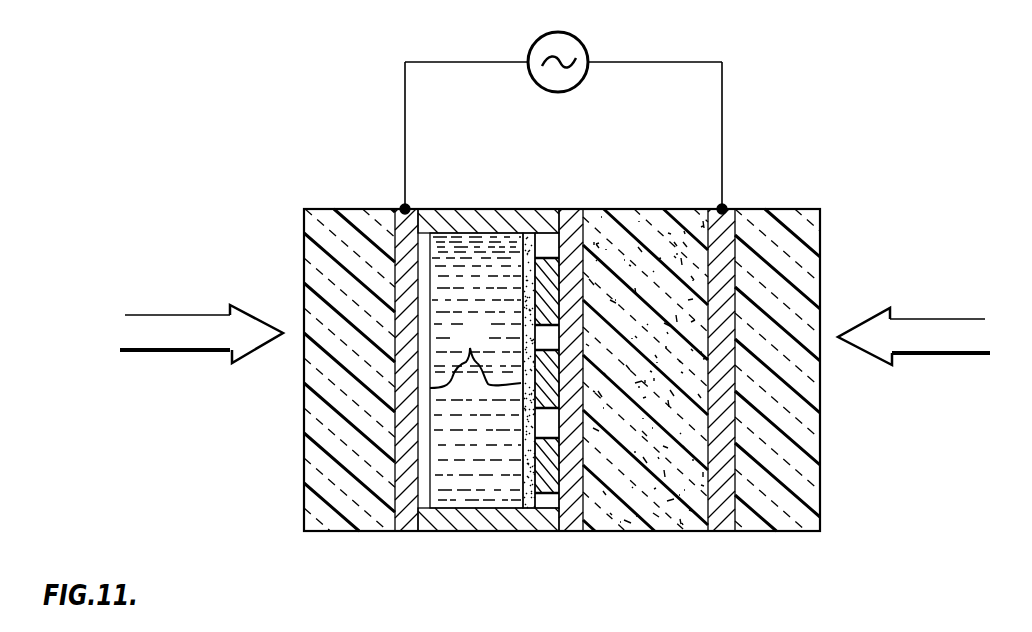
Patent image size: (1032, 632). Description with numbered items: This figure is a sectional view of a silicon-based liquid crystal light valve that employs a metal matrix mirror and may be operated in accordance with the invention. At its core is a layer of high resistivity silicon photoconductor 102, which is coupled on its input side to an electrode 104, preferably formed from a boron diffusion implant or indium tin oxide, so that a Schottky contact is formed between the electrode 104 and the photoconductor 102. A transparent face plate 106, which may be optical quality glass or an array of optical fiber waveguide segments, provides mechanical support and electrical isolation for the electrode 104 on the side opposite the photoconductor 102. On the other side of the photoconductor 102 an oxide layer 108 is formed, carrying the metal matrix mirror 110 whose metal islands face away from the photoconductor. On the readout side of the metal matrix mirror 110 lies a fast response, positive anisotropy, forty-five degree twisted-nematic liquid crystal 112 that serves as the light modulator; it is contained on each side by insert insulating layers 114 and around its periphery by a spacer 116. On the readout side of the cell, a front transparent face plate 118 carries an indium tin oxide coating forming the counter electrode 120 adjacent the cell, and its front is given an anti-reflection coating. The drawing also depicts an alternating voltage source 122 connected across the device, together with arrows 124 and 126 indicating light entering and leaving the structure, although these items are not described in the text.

The photoconductor 102 is at (650, 515).
The electrode 104 is at (723, 518).
The transparent face plate 106 is at (810, 436).
The oxide layer 108 is at (575, 520).
The metal matrix mirror 110 is at (549, 258).
The liquid crystal 112 is at (455, 493).
The insert insulating layers 114 is at (475, 357).
The spacer 116 is at (472, 535).
The front transparent face plate 118 is at (363, 210).
The counter electrode 120 is at (408, 520).
The AC power source 122 is at (587, 49).
The inlet flow direction 124 is at (890, 310).
The outlet flow direction 126 is at (255, 311).